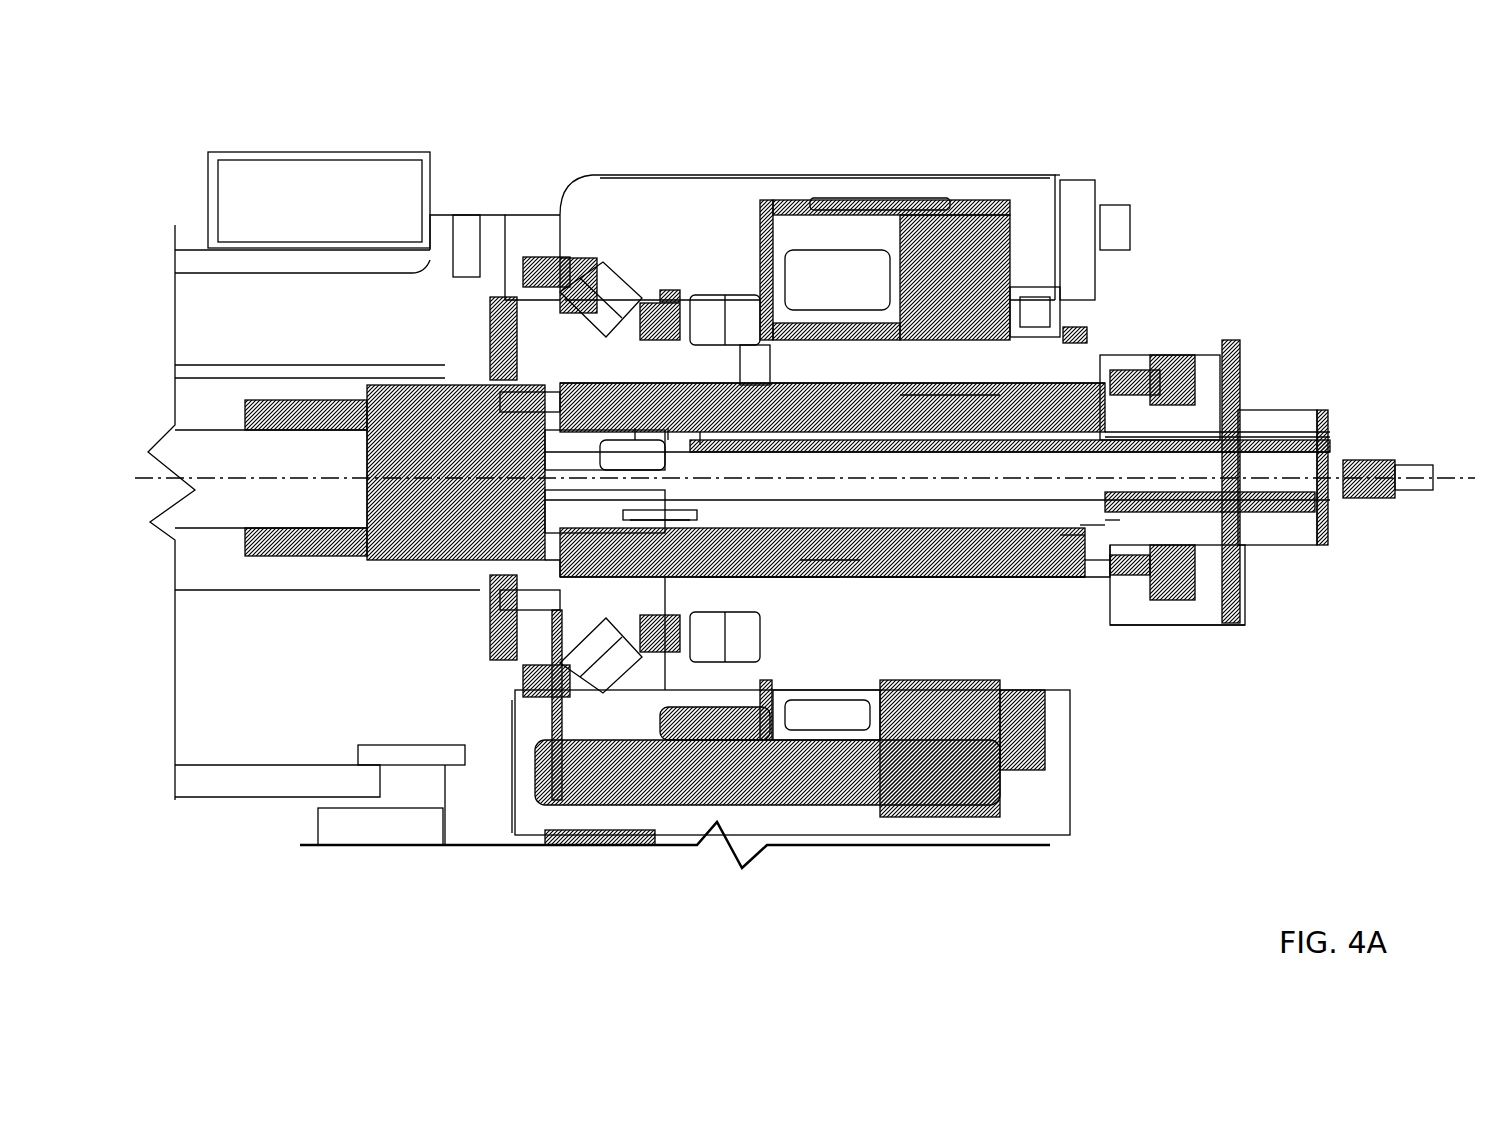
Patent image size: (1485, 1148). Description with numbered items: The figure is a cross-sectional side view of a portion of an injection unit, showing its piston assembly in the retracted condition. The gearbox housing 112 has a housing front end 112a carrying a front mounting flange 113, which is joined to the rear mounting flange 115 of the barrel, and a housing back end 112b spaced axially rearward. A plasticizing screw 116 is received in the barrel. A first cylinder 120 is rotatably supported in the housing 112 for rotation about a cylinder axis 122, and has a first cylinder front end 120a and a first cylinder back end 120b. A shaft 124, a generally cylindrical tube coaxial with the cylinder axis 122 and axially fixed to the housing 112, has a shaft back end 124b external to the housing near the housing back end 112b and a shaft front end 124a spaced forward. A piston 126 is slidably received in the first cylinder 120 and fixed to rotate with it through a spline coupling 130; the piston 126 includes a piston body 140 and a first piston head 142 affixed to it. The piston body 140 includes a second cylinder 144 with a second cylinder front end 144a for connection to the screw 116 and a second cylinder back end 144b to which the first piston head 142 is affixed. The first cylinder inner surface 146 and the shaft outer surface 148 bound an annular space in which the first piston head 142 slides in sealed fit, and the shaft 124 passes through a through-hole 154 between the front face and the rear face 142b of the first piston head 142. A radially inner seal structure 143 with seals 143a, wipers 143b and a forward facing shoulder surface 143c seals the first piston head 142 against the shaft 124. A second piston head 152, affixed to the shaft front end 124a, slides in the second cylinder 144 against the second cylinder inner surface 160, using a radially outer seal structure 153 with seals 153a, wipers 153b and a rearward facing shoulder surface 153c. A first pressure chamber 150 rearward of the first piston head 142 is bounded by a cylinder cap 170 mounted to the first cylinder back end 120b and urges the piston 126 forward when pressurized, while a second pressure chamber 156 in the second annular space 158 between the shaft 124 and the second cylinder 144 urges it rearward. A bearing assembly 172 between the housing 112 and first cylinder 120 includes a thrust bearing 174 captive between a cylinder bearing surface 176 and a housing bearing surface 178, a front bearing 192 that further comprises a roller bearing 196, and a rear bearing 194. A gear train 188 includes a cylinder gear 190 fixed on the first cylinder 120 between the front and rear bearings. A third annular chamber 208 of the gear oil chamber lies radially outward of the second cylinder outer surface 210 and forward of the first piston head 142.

The housing 112 is at (1022, 98).
The housing front end 112a is at (490, 808).
The housing back end 112b is at (1262, 625).
The front mounting flange 113 is at (524, 220).
The rear mounting flange 115 is at (430, 232).
The plasticizing screw 116 is at (200, 436).
The first cylinder 120 is at (949, 615).
The first cylinder front end 120a is at (540, 615).
The first cylinder back end 120b is at (1162, 595).
The cylinder axis 122 is at (152, 474).
The shaft 124 is at (848, 522).
The shaft front end 124a is at (565, 530).
The shaft back end 124b is at (1340, 555).
The piston 126 is at (1232, 392).
The spline coupling 130 is at (562, 380).
The piston body 140 is at (1034, 378).
The first piston head 142 is at (1114, 390).
The rear face 142b is at (1195, 575).
The radially inner seal structure 143 is at (1095, 430).
The seals 143a is at (1100, 530).
The wipers 143b is at (1115, 526).
The forward facing shoulder surface 143c is at (1065, 535).
The second cylinder 144 is at (912, 565).
The second cylinder front end 144a is at (542, 570).
The second cylinder back end 144b is at (1107, 565).
The first cylinder inner surface 146 is at (890, 570).
The shaft outer surface 148 is at (775, 528).
The first pressure chamber 150 is at (1143, 566).
The second piston head 152 is at (625, 440).
The radially outer seal structure 153 is at (656, 500).
The seals 153a is at (668, 426).
The wipers 153b is at (640, 426).
The rearward facing shoulder surface 153c is at (700, 436).
The through-hole 154 is at (1155, 436).
The second pressure chamber 156 is at (955, 408).
The second annular space 158 is at (660, 540).
The second cylinder inner surface 160 is at (835, 530).
The cylinder cap 170 is at (1180, 372).
The bearing assembly 172 is at (600, 188).
The thrust bearing 174 is at (606, 274).
The cylinder bearing surface 176 is at (554, 312).
The housing bearing surface 178 is at (622, 290).
The gear train 188 is at (890, 200).
The cylinder gear 190 is at (822, 252).
The front bearing 192 is at (705, 208).
The rear bearing 194 is at (1038, 270).
The roller bearing 196 is at (745, 292).
The third annular chamber 208 is at (762, 378).
The second cylinder outer surface 210 is at (850, 384).